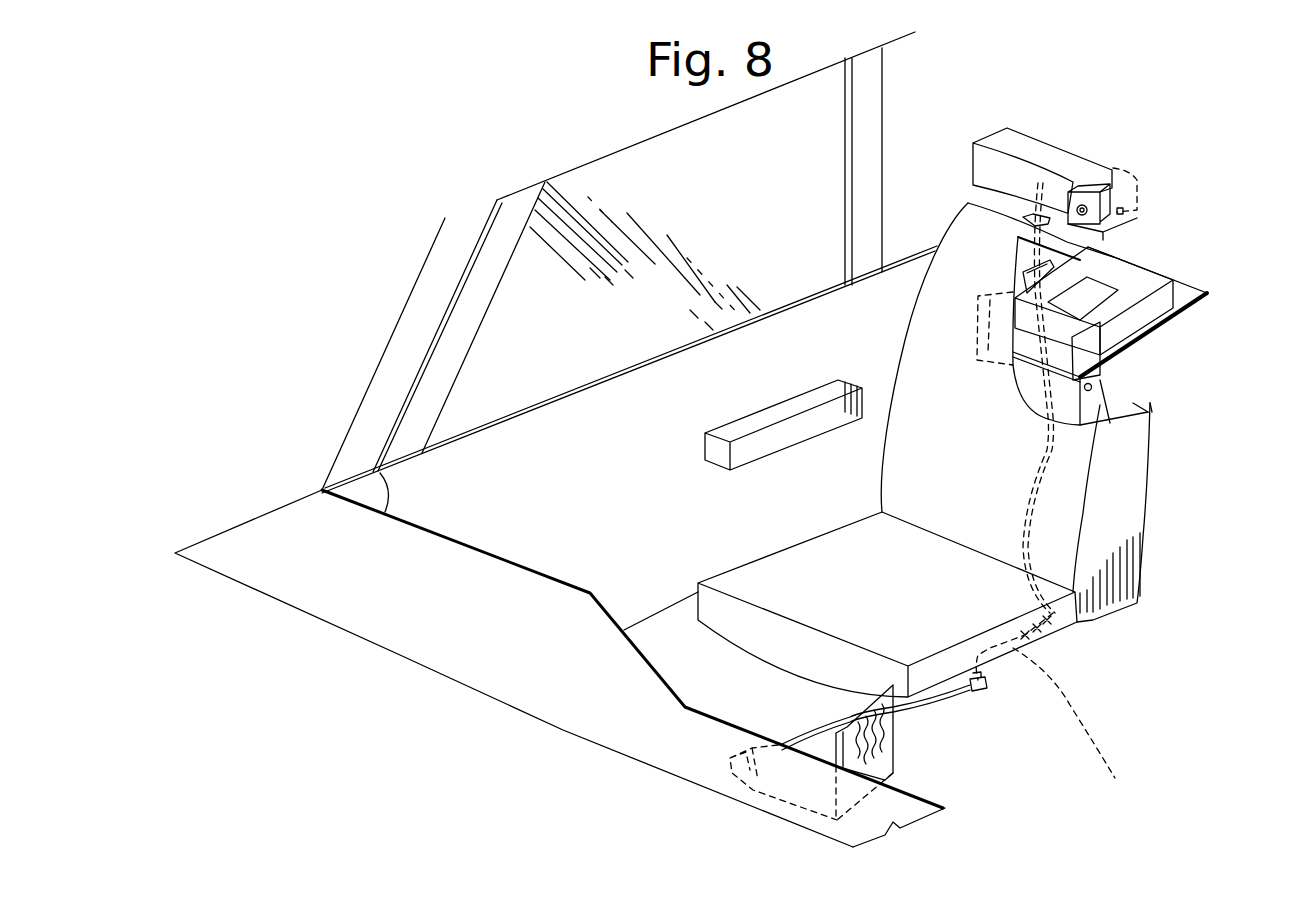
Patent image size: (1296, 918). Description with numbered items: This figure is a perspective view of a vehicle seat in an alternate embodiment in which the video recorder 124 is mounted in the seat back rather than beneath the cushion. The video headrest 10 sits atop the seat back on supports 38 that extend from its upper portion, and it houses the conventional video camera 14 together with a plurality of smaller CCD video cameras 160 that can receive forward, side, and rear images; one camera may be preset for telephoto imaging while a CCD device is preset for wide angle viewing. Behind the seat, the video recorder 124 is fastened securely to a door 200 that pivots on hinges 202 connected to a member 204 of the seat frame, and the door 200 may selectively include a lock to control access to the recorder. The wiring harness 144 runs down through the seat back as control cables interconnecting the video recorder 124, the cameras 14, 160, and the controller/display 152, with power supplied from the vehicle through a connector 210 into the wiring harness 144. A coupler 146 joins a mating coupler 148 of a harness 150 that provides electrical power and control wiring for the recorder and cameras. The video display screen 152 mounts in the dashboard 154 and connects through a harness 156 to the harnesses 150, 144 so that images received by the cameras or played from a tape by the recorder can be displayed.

The video headrest 10 is at (993, 145).
The video camera 14 is at (1073, 190).
The video cameras 160 is at (1117, 168).
The supports 38 is at (1030, 218).
The door 200 is at (1196, 300).
The video recorder 124 is at (1162, 308).
The member of the seat frame 204 is at (1083, 352).
The hinges 202 is at (1092, 386).
The wiring harness 144 is at (1037, 543).
The coupler 146 is at (1090, 618).
The mating coupler 148 is at (1053, 637).
The harness 150 is at (1091, 722).
The connector 210 is at (990, 677).
The video display screen 152 is at (893, 740).
The dashboard 154 is at (472, 582).
The harness 156 is at (782, 787).